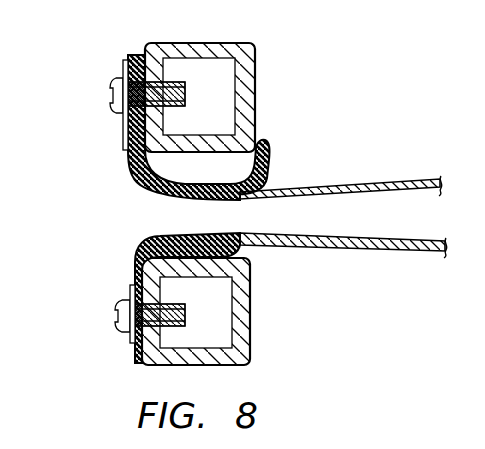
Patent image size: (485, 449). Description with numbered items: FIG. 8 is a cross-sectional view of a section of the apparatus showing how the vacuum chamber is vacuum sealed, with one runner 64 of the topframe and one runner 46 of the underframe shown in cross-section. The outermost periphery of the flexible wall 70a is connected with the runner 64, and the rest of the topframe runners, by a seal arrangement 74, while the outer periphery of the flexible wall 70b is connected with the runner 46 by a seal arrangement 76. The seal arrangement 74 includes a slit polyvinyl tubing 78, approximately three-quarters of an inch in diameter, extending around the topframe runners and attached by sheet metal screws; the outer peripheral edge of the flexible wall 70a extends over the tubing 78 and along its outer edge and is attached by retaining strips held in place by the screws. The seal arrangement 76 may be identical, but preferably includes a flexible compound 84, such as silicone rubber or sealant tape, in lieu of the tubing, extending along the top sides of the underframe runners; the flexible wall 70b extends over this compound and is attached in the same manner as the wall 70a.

The seal arrangement 74 is at (248, 111).
The seal arrangement 76 is at (253, 300).
The runner 64 is at (253, 92).
The runner 46 is at (250, 333).
The slit polyvinyl tubing 78 is at (268, 150).
The flexible compound 84 is at (245, 255).
The flexible wall 70a is at (305, 191).
The flexible wall 70b is at (325, 247).